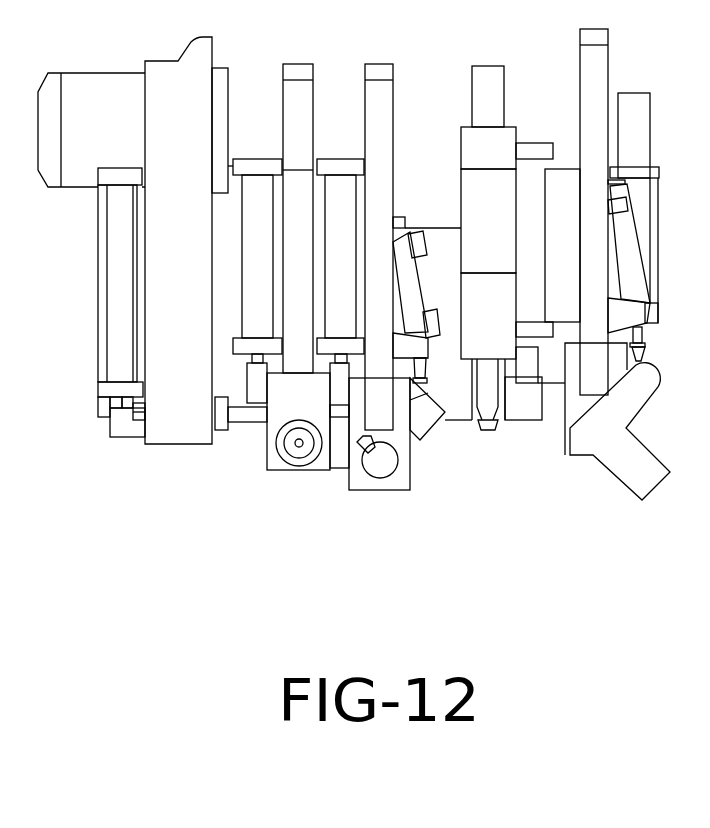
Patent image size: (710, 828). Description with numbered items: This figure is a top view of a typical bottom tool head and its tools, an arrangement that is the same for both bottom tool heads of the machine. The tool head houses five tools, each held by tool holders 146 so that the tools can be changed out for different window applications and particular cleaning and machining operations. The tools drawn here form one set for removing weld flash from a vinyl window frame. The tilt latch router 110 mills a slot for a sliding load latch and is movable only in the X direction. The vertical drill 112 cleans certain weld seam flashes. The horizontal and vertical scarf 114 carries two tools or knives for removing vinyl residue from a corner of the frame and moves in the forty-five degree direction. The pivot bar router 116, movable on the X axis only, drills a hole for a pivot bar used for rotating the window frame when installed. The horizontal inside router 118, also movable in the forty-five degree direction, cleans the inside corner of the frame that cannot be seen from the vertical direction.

The tilt latch router 110 is at (183, 446).
The vertical drill 112 is at (300, 447).
The horizontal and vertical scarf 114 is at (363, 491).
The pivot bar router 116 is at (487, 430).
The horizontal inside router 118 is at (651, 492).
The tool holders 146 is at (157, 446).